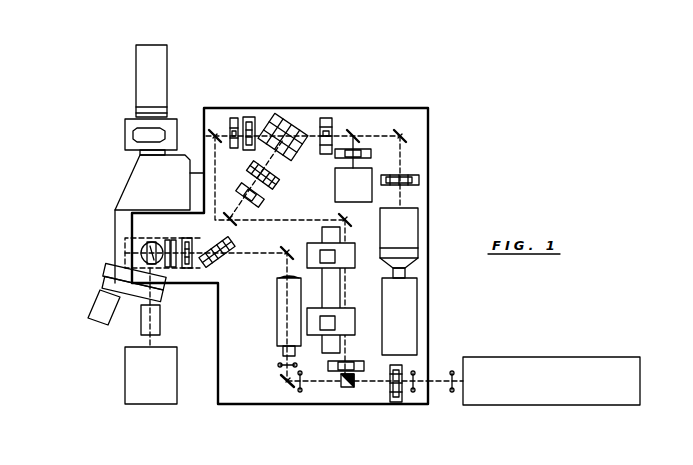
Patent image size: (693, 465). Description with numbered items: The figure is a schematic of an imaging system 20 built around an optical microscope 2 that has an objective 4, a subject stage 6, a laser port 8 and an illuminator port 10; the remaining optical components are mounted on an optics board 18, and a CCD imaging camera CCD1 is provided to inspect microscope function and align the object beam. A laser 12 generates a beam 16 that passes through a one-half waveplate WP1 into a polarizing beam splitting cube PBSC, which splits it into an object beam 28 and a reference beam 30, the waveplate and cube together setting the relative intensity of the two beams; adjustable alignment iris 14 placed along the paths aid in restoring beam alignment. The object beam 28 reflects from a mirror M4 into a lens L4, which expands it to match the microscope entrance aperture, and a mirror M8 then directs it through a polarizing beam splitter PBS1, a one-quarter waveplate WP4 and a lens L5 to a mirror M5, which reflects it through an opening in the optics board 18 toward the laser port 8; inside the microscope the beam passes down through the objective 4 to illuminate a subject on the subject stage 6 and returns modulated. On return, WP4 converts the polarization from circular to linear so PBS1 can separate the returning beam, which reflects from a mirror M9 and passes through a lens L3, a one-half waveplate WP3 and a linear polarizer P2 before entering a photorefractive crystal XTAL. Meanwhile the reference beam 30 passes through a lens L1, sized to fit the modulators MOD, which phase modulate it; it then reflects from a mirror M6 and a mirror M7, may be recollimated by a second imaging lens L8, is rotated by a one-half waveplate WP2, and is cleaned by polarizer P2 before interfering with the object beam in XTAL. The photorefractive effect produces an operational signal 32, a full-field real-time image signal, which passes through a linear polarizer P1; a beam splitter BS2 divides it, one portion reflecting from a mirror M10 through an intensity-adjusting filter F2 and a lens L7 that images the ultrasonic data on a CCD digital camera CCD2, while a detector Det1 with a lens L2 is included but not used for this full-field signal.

The optical microscope 2 is at (165, 221).
The CCD imaging camera CCD1 is at (168, 76).
The illuminator port 10 is at (135, 132).
The mirror M9 is at (210, 133).
The lens L3 is at (232, 118).
The one-half waveplate WP3 is at (249, 117).
The linear polarizer P2 is at (270, 120).
The photorefractive crystal XTAL is at (292, 112).
The operational signal 32 is at (311, 130).
The linear polarizer P1 is at (329, 118).
The beam splitter BS2 is at (354, 130).
The optics board 18 is at (388, 108).
The mirror M10 is at (406, 137).
The imaging system 20 is at (333, 228).
The lens L2 is at (371, 153).
The filter F2 is at (419, 180).
The detector Det1 is at (366, 193).
The lens L7 is at (408, 239).
The CCD digital camera CCD2 is at (417, 300).
The second imaging lens L8 is at (242, 190).
The one-half waveplate WP2 is at (273, 190).
The polarizing beam splitter PBS1 is at (228, 244).
The mirror M8 is at (286, 250).
The mirror M7 is at (226, 220).
The mirror M6 is at (350, 218).
The modulators MOD is at (355, 268).
The lens L4 is at (277, 300).
The mirror M4 is at (282, 382).
The alignment iris 14 is at (280, 365).
The object beam 28 is at (313, 380).
The reference beam 30 is at (347, 343).
The polarizing beam splitting cube PBSC is at (347, 388).
The lens L1 is at (361, 371).
The one-half waveplate WP1 is at (396, 402).
The laser 12 is at (540, 388).
The beam 16 is at (438, 383).
The laser port 8 is at (141, 245).
The mirror M5 is at (145, 255).
The lens L5 is at (169, 240).
The one-quarter waveplate WP4 is at (187, 268).
The objective 4 is at (160, 318).
The subject stage 6 is at (155, 383).